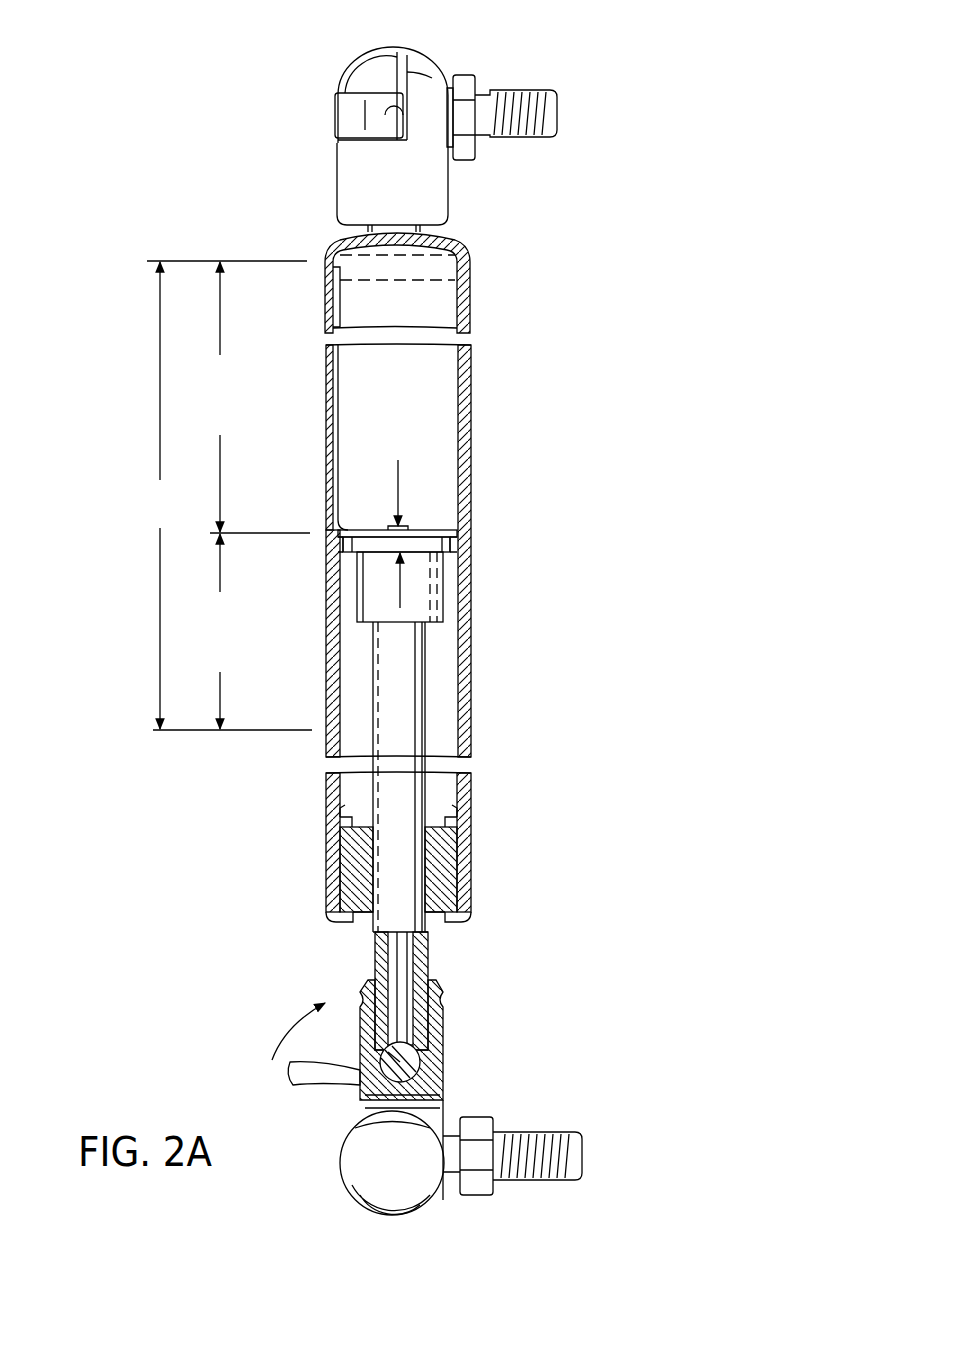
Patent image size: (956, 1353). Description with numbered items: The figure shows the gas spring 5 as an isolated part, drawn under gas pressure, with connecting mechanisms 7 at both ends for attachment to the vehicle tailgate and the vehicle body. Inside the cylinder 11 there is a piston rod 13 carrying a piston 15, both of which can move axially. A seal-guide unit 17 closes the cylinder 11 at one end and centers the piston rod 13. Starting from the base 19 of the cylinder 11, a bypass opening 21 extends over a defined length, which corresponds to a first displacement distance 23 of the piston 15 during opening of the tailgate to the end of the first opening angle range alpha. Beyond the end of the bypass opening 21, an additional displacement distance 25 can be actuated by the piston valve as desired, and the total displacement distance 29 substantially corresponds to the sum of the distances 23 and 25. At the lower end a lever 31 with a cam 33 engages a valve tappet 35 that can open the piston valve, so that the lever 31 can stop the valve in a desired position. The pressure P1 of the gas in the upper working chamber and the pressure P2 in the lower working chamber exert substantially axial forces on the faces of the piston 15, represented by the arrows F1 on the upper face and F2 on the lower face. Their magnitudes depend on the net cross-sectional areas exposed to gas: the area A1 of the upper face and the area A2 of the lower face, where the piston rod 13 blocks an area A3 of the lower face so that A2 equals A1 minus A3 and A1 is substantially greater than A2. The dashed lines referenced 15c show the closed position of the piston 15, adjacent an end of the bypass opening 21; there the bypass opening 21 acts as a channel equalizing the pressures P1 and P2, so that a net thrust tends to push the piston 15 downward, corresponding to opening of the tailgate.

The gas spring 5 is at (598, 690).
The connecting mechanisms 7 is at (487, 83).
The cylinder 11 is at (472, 430).
The piston rod 13 is at (405, 677).
The piston 15 is at (418, 587).
The closed position of the piston 15c is at (422, 280).
The seal-guide unit 17 is at (455, 860).
The base 19 is at (465, 230).
The bypass opening 21 is at (333, 492).
The first displacement distance 23 is at (260, 397).
The additional displacement distance 25 is at (228, 631).
The total displacement distance 29 is at (229, 495).
The lever 31 is at (322, 1082).
The cam 33 is at (410, 1057).
The valve tappet 35 is at (405, 975).
The net cross-sectional area of the upper piston face A1 is at (420, 530).
The net cross-sectional area of the lower piston face A2 is at (455, 548).
The cross-sectional area blocked by the piston rod A3 is at (405, 643).
The force on the upper piston face F1 is at (398, 472).
The force on the lower piston face F2 is at (398, 592).
The pressure in the upper working chamber P1 is at (410, 400).
The pressure in the lower working chamber P2 is at (445, 720).